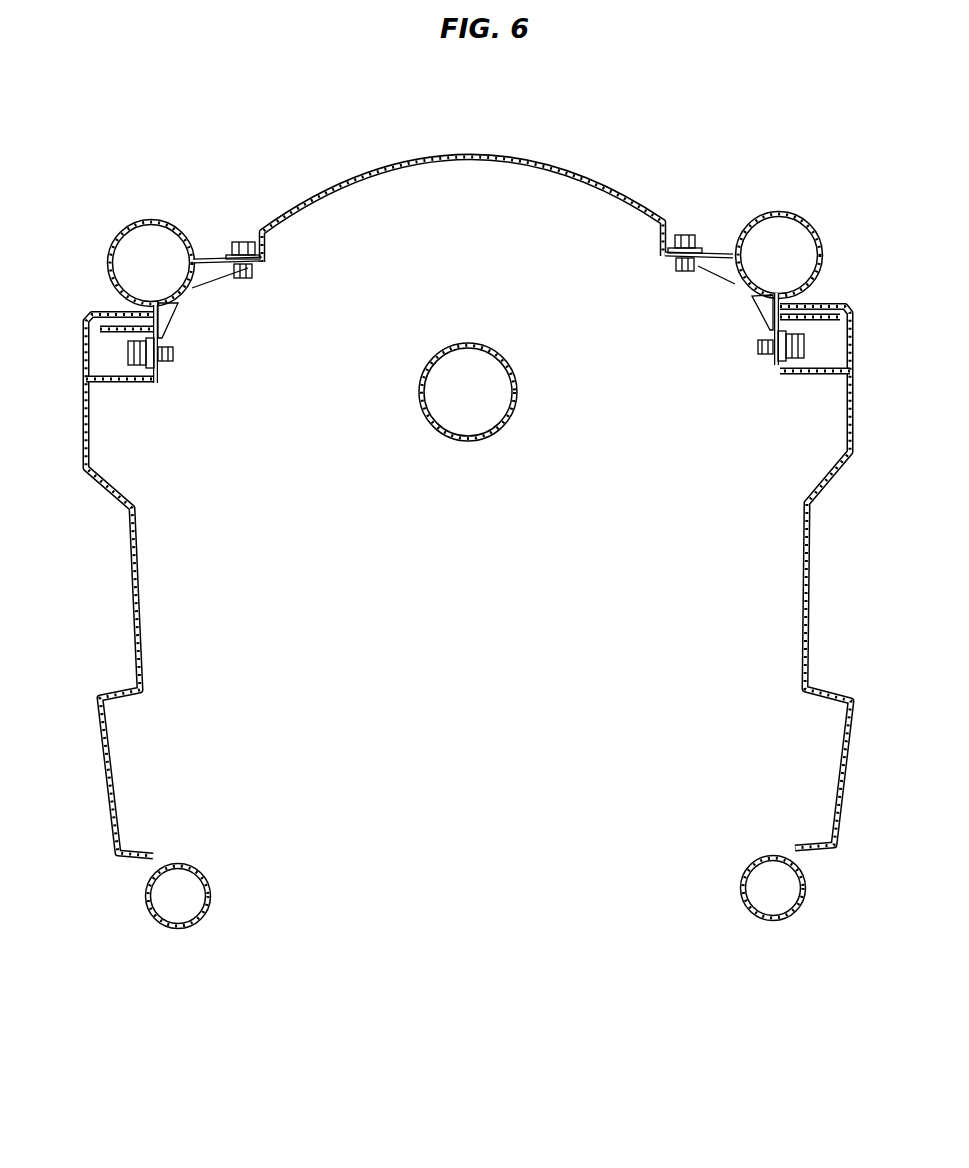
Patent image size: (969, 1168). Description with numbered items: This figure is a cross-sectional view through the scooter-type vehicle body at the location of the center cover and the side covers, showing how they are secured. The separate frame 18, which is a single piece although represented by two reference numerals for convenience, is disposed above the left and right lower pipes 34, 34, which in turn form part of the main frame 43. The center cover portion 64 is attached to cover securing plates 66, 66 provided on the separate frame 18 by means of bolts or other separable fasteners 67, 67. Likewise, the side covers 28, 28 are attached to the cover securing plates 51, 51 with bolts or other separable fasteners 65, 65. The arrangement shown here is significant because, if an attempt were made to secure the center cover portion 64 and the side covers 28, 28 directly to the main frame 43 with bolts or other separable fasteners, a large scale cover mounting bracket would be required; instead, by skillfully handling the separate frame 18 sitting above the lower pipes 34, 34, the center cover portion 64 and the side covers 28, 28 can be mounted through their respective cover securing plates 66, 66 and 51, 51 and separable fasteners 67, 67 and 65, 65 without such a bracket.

The separate frame 18 is at (155, 220).
The center cover portion 64 is at (464, 153).
The cover securing plate 66 is at (235, 282).
The separable fastener 67 is at (242, 240).
The side cover 28 is at (132, 605).
The cover securing plate 51 is at (170, 337).
The separable fastener 65 is at (128, 352).
The main frame 43 is at (468, 443).
The lower pipe 34 is at (178, 930).